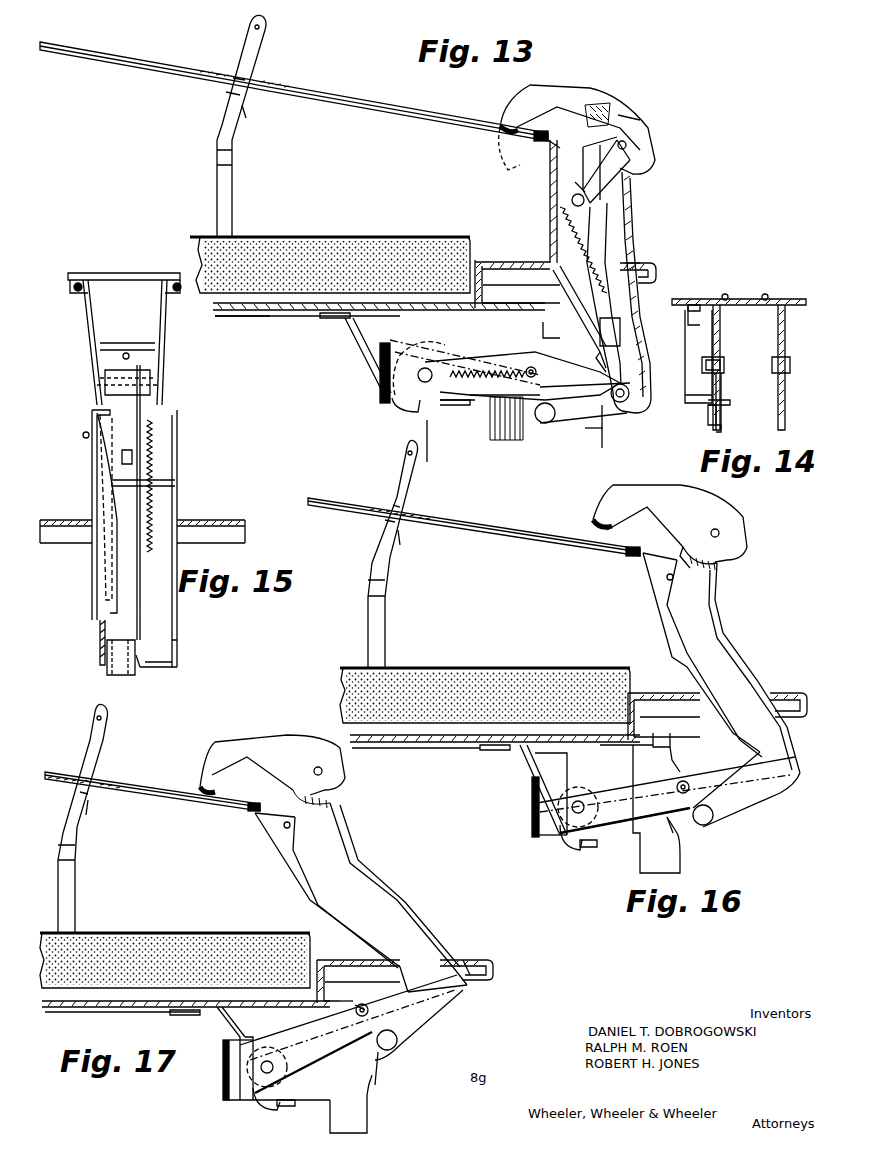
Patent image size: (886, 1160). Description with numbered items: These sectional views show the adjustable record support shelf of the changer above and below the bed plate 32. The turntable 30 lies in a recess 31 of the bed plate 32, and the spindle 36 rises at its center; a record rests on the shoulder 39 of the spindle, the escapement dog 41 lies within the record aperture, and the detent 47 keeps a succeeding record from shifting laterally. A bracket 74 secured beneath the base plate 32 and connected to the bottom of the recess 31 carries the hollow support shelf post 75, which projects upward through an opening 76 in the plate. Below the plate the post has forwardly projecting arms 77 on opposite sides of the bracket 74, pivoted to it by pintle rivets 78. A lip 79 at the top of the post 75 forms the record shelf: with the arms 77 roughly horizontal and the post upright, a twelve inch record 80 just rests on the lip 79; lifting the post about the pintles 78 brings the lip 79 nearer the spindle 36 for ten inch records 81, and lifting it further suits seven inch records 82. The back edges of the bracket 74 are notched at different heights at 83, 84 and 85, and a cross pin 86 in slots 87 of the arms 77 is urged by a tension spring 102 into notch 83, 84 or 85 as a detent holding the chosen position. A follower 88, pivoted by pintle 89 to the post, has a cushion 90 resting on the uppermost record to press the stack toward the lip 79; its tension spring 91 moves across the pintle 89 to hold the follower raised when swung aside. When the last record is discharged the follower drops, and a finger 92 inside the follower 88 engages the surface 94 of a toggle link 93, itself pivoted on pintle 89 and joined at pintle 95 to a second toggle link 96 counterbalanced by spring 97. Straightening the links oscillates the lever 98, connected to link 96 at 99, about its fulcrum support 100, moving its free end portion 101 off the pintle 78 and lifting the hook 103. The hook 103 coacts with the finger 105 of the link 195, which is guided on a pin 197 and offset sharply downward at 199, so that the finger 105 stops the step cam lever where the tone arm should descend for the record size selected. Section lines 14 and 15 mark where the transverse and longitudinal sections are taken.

In FIG. 13, the section line 14 is at (329, 303).
In FIG. 13, the section line 15 is at (548, 175).
In FIG. 13, the turntable 30 is at (420, 248).
In FIG. 16, the turntable 30 is at (538, 652).
In FIG. 17, the turntable 30 is at (265, 932).
In FIG. 13, the recess 31 is at (484, 297).
In FIG. 14, the recess 31 is at (798, 305).
In FIG. 16, the recess 31 is at (636, 718).
In FIG. 17, the recess 31 is at (330, 966).
In FIG. 13, the bed plate 32 is at (657, 266).
In FIG. 15, the bed plate 32 is at (220, 520).
In FIG. 16, the bed plate 32 is at (805, 694).
In FIG. 17, the bed plate 32 is at (492, 960).
In FIG. 13, the spindle 36 is at (222, 206).
In FIG. 16, the spindle 36 is at (380, 642).
In FIG. 17, the spindle 36 is at (65, 905).
In FIG. 13, the shoulder 39 is at (228, 96).
In FIG. 16, the shoulder 39 is at (386, 524).
In FIG. 17, the shoulder 39 is at (80, 791).
In FIG. 13, the escapement dog 41 is at (244, 102).
In FIG. 16, the escapement dog 41 is at (397, 530).
In FIG. 17, the escapement dog 41 is at (85, 802).
In FIG. 13, the detent 47 is at (248, 80).
In FIG. 16, the detent 47 is at (402, 506).
In FIG. 17, the detent 47 is at (92, 778).
In FIG. 13, the bracket 74 is at (554, 320).
In FIG. 16, the bracket 74 is at (655, 745).
In FIG. 17, the bracket 74 is at (341, 993).
In FIG. 13, the support shelf post 75 is at (550, 200).
In FIG. 15, the support shelf post 75 is at (175, 480).
In FIG. 16, the support shelf post 75 is at (668, 635).
In FIG. 17, the support shelf post 75 is at (378, 888).
In FIG. 13, the opening 76 is at (628, 262).
In FIG. 17, the opening 76 is at (460, 958).
In FIG. 13, the arms 77 is at (565, 358).
In FIG. 14, the arms 77 is at (710, 345).
In FIG. 15, the arms 77 is at (98, 636).
In FIG. 16, the arms 77 is at (648, 772).
In FIG. 17, the arms 77 is at (295, 1040).
In FIG. 13, the pintle rivets 78 is at (428, 366).
In FIG. 14, the pintle rivets 78 is at (770, 366).
In FIG. 16, the pintle rivets 78 is at (580, 800).
In FIG. 17, the pintle rivets 78 is at (275, 1063).
In FIG. 13, the lip 79 is at (548, 142).
In FIG. 16, the lip 79 is at (643, 556).
In FIG. 17, the lip 79 is at (256, 810).
In FIG. 13, the twelve inch record 80 is at (500, 118).
In FIG. 16, the ten inch records 81 is at (542, 525).
In FIG. 17, the seven inch records 82 is at (180, 800).
In FIG. 13, the notch 83 is at (465, 357).
In FIG. 16, the notch 83 is at (673, 826).
In FIG. 17, the notch 83 is at (382, 1078).
In FIG. 13, the notch 84 is at (530, 362).
In FIG. 16, the notch 84 is at (676, 784).
In FIG. 17, the notch 84 is at (385, 1055).
In FIG. 13, the notch 85 is at (545, 310).
In FIG. 16, the notch 85 is at (680, 750).
In FIG. 17, the notch 85 is at (360, 1012).
In FIG. 13, the cross pin 86 is at (540, 371).
In FIG. 16, the cross pin 86 is at (686, 782).
In FIG. 17, the cross pin 86 is at (368, 1007).
In FIG. 13, the slots 87 is at (542, 376).
In FIG. 16, the slots 87 is at (690, 787).
In FIG. 17, the slots 87 is at (370, 1010).
In FIG. 13, the follower 88 is at (582, 90).
In FIG. 15, the follower 88 is at (88, 336).
In FIG. 16, the follower 88 is at (687, 510).
In FIG. 17, the follower 88 is at (273, 742).
In FIG. 13, the pintle 89 is at (640, 147).
In FIG. 15, the pintle 89 is at (100, 385).
In FIG. 16, the pintle 89 is at (720, 533).
In FIG. 17, the pintle 89 is at (324, 771).
In FIG. 13, the cushion 90 is at (503, 126).
In FIG. 15, the cushion 90 is at (78, 283).
In FIG. 16, the cushion 90 is at (593, 530).
In FIG. 17, the cushion 90 is at (198, 790).
In FIG. 13, the tension spring 91 is at (570, 182).
In FIG. 15, the tension spring 91 is at (145, 438).
In FIG. 13, the finger 92 is at (612, 108).
In FIG. 15, the finger 92 is at (126, 352).
In FIG. 13, the toggle link 93 is at (612, 178).
In FIG. 15, the toggle link 93 is at (140, 420).
In FIG. 16, the toggle link 93 is at (720, 566).
In FIG. 17, the toggle link 93 is at (333, 808).
In FIG. 13, the surface 94 is at (638, 118).
In FIG. 13, the pintle connection 95 is at (583, 204).
In FIG. 15, the pintle connection 95 is at (122, 456).
In FIG. 13, the toggle link 96 is at (630, 325).
In FIG. 15, the toggle link 96 is at (135, 503).
In FIG. 13, the spring 97 is at (582, 235).
In FIG. 15, the spring 97 is at (150, 515).
In FIG. 13, the lever 98 is at (610, 412).
In FIG. 14, the lever 98 is at (724, 392).
In FIG. 15, the lever 98 is at (118, 677).
In FIG. 16, the lever 98 is at (740, 805).
In FIG. 17, the lever 98 is at (428, 1010).
In FIG. 13, the pivot connection 99 is at (632, 402).
In FIG. 15, the pivot connection 99 is at (140, 668).
In FIG. 13, the fulcrum support 100 is at (546, 424).
In FIG. 16, the fulcrum support 100 is at (705, 826).
In FIG. 17, the fulcrum support 100 is at (398, 1042).
In FIG. 13, the free end portion 101 is at (365, 345).
In FIG. 14, the free end portion 101 is at (724, 420).
In FIG. 16, the free end portion 101 is at (548, 840).
In FIG. 17, the free end portion 101 is at (250, 1102).
In FIG. 13, the tension spring 102 is at (380, 388).
In FIG. 16, the tension spring 102 is at (532, 823).
In FIG. 17, the tension spring 102 is at (222, 1088).
In FIG. 13, the hook 103 is at (400, 412).
In FIG. 16, the hook 103 is at (585, 852).
In FIG. 17, the hook 103 is at (278, 1112).
In FIG. 13, the finger 105 is at (473, 407).
In FIG. 14, the finger 105 is at (710, 415).
In FIG. 16, the finger 105 is at (600, 847).
In FIG. 17, the finger 105 is at (290, 1108).
In FIG. 13, the link 195 is at (272, 316).
In FIG. 14, the link 195 is at (705, 299).
In FIG. 16, the link 195 is at (440, 748).
In FIG. 17, the link 195 is at (125, 1012).
In FIG. 13, the guide pin 197 is at (332, 318).
In FIG. 14, the guide pin 197 is at (696, 322).
In FIG. 16, the guide pin 197 is at (495, 750).
In FIG. 17, the guide pin 197 is at (190, 1015).
In FIG. 13, the downward offset 199 is at (662, 339).
In FIG. 14, the downward offset 199 is at (684, 380).
In FIG. 16, the downward offset 199 is at (528, 775).
In FIG. 17, the downward offset 199 is at (222, 1035).